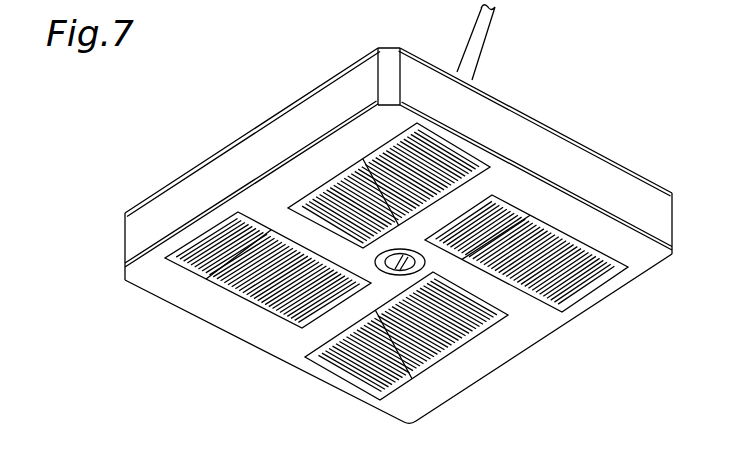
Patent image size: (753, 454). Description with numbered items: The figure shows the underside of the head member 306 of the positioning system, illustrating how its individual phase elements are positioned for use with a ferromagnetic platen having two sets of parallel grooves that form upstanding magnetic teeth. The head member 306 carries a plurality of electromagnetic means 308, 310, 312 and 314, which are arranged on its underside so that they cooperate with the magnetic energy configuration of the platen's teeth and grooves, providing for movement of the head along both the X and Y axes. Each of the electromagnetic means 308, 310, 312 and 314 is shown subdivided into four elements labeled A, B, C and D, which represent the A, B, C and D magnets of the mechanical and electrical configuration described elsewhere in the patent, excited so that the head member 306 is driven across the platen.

The head member 306 is at (325, 93).
The electromagnetic means 308 is at (452, 142).
The electromagnetic means 310 is at (590, 297).
The electromagnetic means 312 is at (453, 352).
The electromagnetic means 314 is at (237, 228).